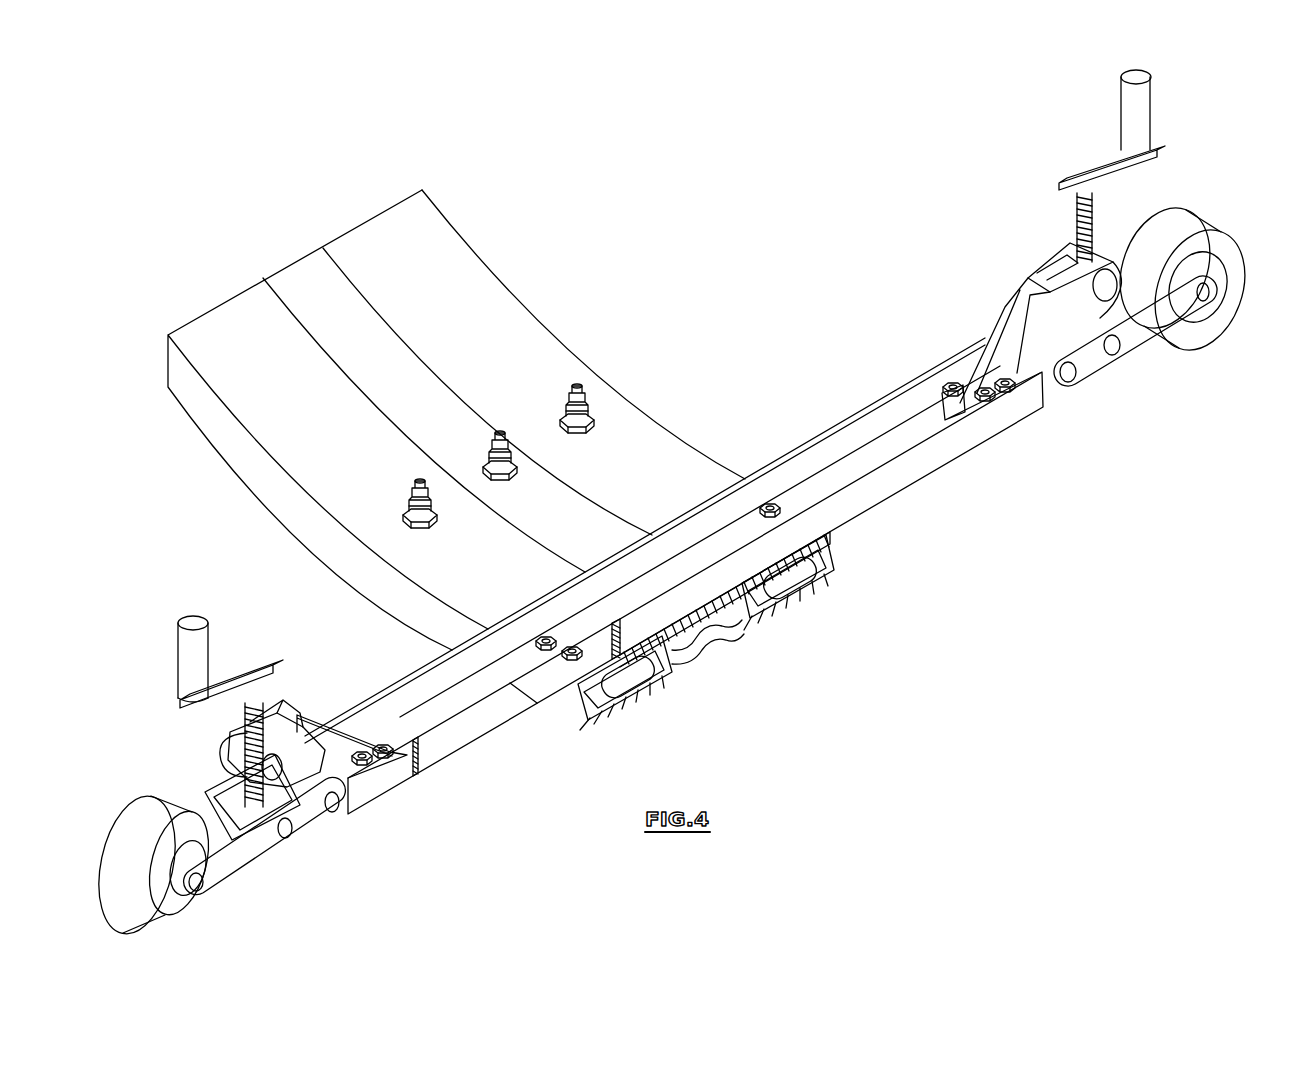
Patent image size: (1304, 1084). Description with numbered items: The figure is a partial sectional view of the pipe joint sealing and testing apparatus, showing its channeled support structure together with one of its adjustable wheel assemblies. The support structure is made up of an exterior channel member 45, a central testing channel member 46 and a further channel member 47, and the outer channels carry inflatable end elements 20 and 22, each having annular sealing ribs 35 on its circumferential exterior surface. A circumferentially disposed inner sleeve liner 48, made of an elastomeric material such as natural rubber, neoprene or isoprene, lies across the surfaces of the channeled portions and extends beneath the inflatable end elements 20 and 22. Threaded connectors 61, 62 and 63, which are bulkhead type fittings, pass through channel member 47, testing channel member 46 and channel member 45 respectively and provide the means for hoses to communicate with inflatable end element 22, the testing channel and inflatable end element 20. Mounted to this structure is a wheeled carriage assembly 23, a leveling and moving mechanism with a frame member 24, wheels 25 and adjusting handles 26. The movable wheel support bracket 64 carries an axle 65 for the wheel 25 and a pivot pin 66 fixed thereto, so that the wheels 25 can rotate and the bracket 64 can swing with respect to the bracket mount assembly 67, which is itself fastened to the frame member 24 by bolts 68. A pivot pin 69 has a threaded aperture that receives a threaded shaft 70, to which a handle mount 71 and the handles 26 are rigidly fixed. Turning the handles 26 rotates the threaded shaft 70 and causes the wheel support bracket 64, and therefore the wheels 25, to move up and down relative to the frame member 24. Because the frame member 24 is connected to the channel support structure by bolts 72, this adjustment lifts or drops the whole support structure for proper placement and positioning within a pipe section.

The inflatable end element 20 is at (650, 685).
The inflatable end element 22 is at (805, 587).
The wheeled carriage assembly 23 is at (866, 392).
The frame member 24 is at (868, 497).
The wheel 25 is at (195, 905).
The adjusting handle 26 is at (195, 618).
The annular sealing rib 35 is at (768, 620).
The exterior channel member 45 is at (233, 313).
The central testing channel member 46 is at (305, 280).
The channel member 47 is at (383, 233).
The inner sleeve liner 48 is at (696, 648).
The threaded connector 61 is at (596, 392).
The threaded connector 62 is at (520, 472).
The threaded connector 63 is at (400, 507).
The movable wheel support bracket 64 is at (300, 825).
The axle 65 is at (1210, 295).
The pivot pin 66 is at (1075, 378).
The bracket mount assembly 67 is at (345, 720).
The bolt 68 is at (365, 765).
The pivot pin 69 is at (222, 745).
The threaded shaft 70 is at (262, 715).
The handle mount 71 is at (245, 675).
The bolt 72 is at (572, 660).